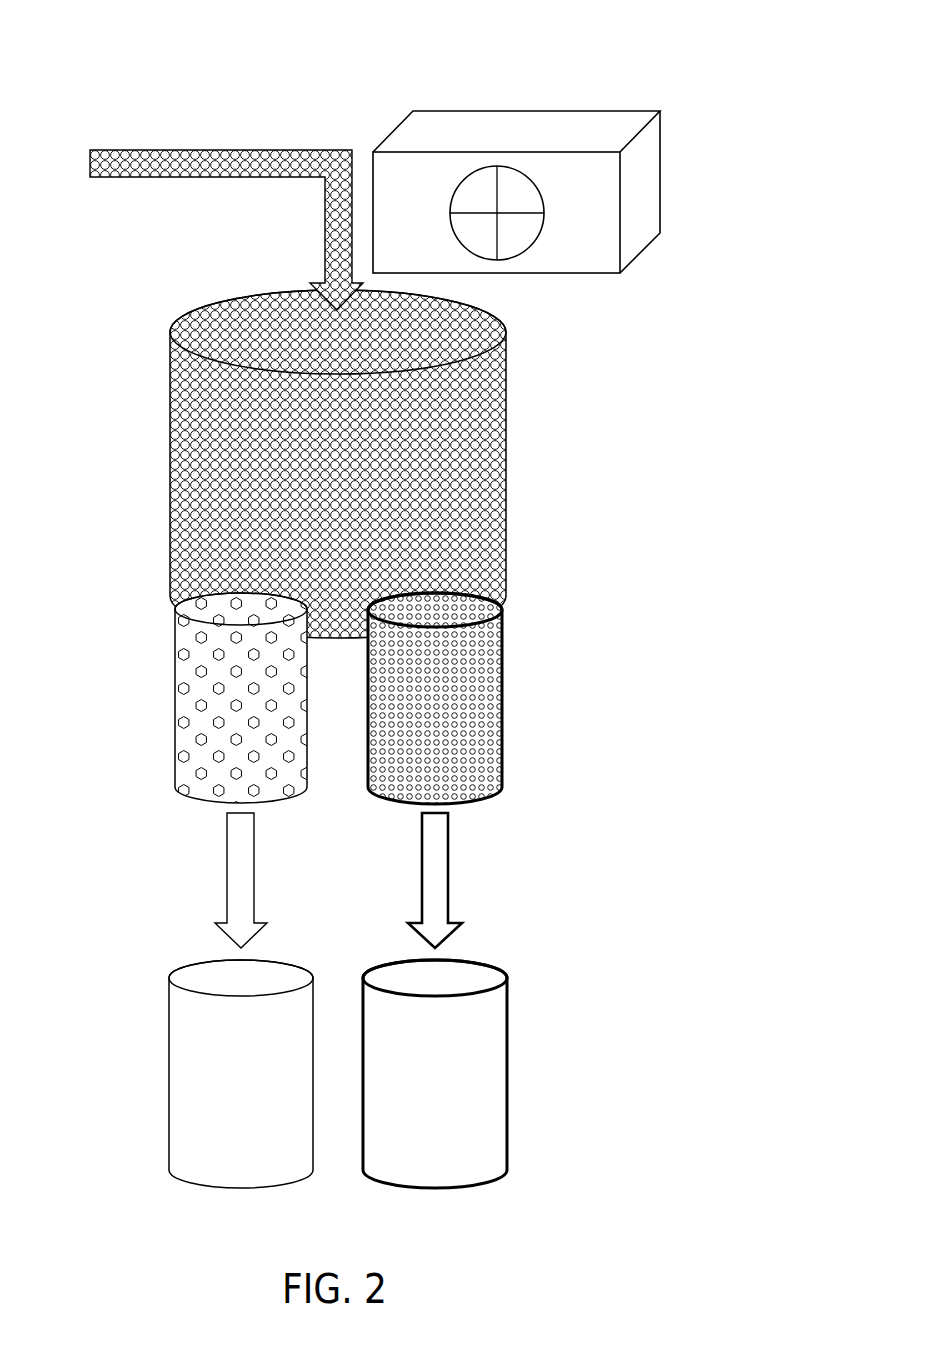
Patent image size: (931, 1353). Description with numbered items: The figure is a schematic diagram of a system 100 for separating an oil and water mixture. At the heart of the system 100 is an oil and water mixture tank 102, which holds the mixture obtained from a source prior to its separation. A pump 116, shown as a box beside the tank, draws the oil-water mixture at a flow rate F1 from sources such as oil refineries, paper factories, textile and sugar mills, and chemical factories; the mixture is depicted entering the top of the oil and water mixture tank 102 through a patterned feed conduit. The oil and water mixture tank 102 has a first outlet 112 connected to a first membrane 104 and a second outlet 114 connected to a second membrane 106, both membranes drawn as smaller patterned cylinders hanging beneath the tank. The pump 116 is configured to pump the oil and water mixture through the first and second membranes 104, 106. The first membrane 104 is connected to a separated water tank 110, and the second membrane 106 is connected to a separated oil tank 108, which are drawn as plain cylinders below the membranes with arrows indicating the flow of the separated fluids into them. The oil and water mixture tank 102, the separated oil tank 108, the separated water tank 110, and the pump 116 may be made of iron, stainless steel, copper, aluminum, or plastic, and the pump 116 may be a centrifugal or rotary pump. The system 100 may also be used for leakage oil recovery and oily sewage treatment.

The system 100 is at (690, 31).
The flow rate F1 is at (207, 162).
The pump 116 is at (588, 210).
The oil and water mixture tank 102 is at (422, 473).
The second membrane 106 is at (217, 697).
The second outlet 114 is at (223, 612).
The first membrane 104 is at (460, 697).
The first outlet 112 is at (455, 612).
The separated oil tank 108 is at (213, 1087).
The separated water tank 110 is at (465, 1087).